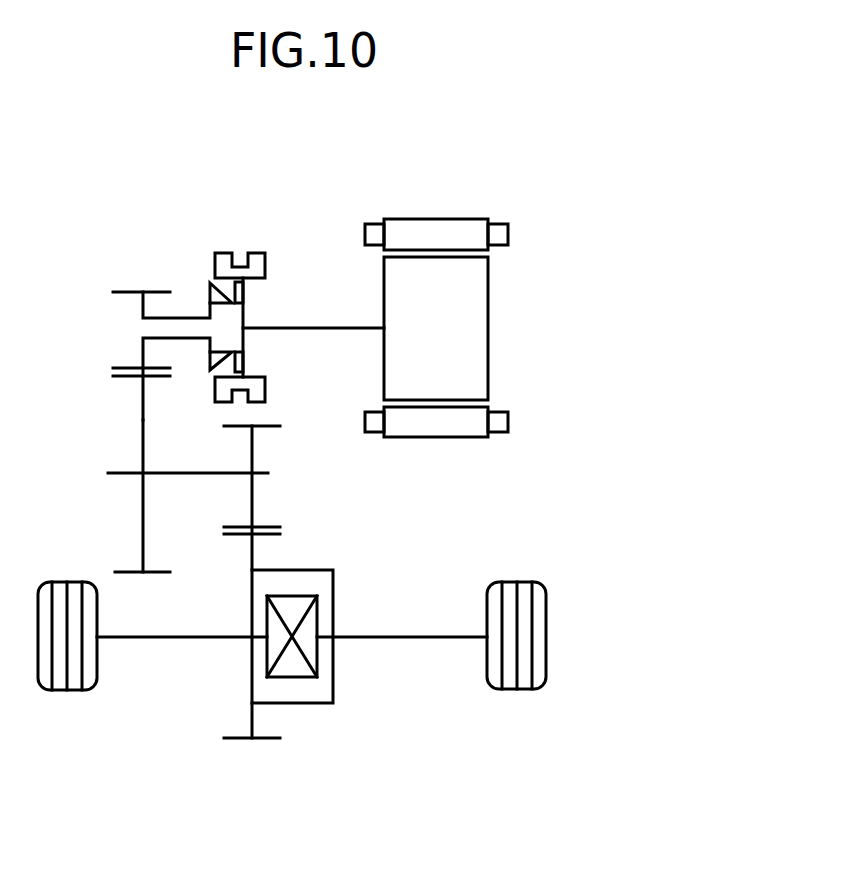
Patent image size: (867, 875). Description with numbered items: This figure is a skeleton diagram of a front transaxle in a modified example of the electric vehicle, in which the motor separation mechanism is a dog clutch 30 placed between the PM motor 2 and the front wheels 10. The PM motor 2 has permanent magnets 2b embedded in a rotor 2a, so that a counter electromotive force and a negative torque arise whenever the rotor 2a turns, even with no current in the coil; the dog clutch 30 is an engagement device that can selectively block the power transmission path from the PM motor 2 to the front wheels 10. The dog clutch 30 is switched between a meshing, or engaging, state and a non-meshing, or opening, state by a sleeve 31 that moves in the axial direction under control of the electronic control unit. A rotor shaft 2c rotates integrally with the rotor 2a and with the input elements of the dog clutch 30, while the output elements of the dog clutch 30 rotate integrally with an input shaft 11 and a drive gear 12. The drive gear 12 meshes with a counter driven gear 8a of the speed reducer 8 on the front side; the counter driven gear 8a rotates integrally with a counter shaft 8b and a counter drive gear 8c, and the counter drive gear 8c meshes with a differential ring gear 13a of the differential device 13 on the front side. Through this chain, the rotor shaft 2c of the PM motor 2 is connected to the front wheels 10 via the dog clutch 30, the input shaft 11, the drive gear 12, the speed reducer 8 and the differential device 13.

The PM motor 2 is at (462, 289).
The rotor 2a is at (478, 302).
The permanent magnets 2b is at (402, 230).
The rotor shaft 2c is at (340, 327).
The dog clutch 30 is at (224, 275).
The sleeve 31 is at (255, 253).
The input shaft 11 is at (193, 318).
The drive gear 12 is at (153, 292).
The speed reducer 8 is at (164, 470).
The counter driven gear 8a is at (130, 377).
The counter shaft 8b is at (190, 477).
The counter drive gear 8c is at (263, 526).
The differential device 13 is at (366, 683).
The differential ring gear 13a is at (267, 742).
The front wheels 10 is at (62, 692).